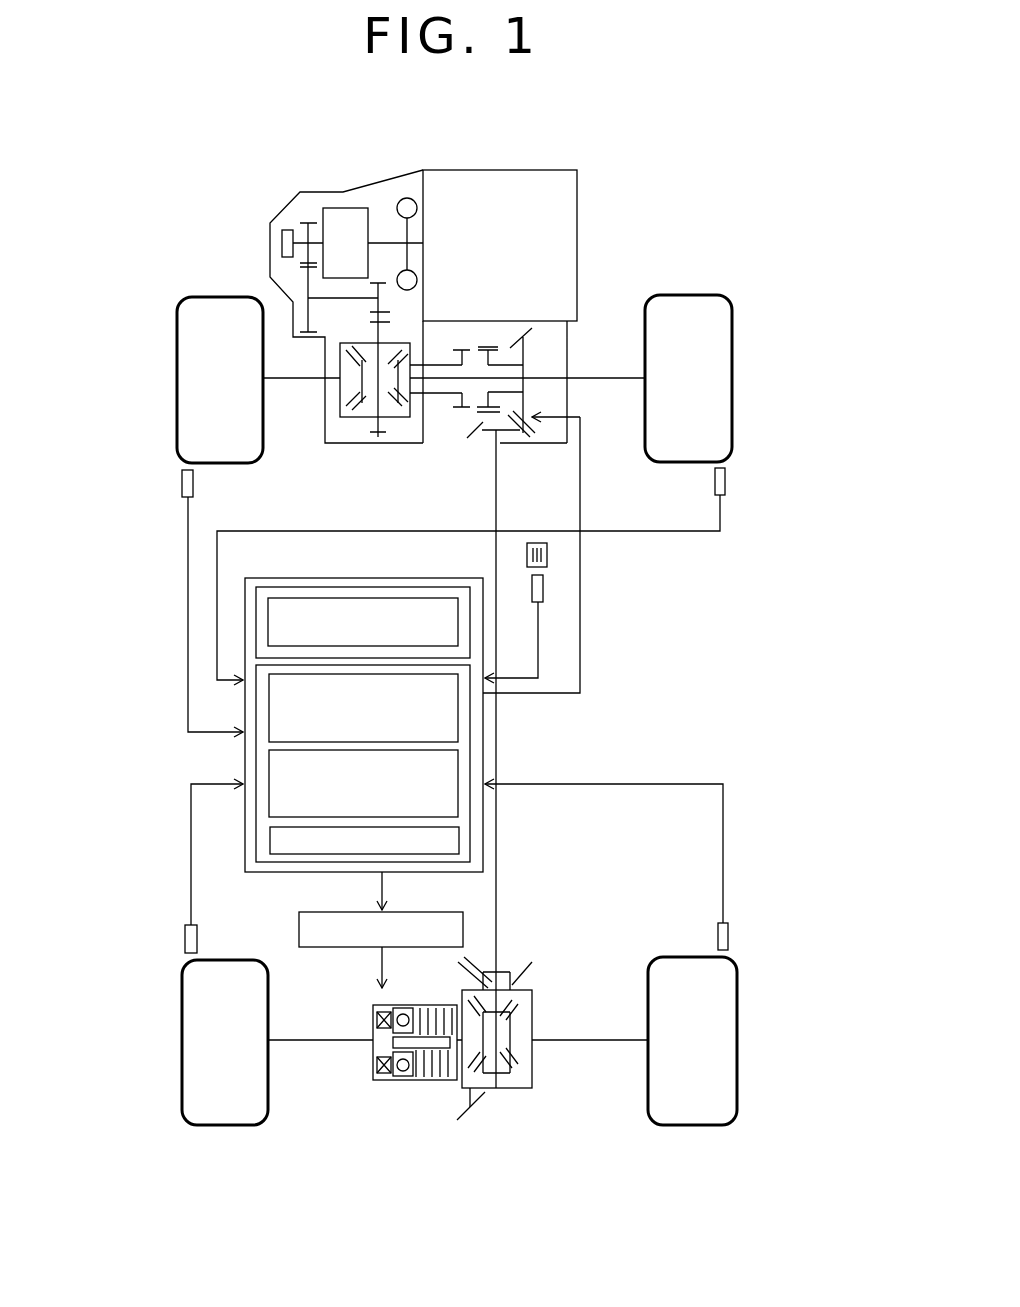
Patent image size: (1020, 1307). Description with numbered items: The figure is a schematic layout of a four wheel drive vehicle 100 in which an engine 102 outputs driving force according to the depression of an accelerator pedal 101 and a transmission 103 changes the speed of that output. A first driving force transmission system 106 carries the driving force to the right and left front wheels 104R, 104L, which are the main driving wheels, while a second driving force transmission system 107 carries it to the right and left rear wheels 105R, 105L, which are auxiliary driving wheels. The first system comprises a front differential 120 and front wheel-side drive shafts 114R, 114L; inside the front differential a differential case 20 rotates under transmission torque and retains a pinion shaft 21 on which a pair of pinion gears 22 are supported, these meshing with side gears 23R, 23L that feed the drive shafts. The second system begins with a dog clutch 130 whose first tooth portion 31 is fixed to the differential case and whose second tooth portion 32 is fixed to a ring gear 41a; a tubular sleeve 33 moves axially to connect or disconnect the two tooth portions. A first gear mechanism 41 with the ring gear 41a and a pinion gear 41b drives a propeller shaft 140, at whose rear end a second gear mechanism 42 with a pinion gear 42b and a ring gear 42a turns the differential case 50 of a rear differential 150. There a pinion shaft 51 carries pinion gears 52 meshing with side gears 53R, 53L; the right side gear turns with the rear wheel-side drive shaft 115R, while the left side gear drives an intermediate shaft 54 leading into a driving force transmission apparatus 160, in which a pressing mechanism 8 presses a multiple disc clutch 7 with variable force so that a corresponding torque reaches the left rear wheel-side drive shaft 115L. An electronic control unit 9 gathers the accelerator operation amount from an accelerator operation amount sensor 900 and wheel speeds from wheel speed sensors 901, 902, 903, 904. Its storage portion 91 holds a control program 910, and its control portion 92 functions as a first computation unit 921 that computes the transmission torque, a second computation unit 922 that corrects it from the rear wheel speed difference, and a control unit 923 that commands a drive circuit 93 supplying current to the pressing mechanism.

The four wheel drive vehicle 100 is at (650, 110).
The accelerator pedal 101 is at (547, 555).
The engine 102 is at (466, 170).
The transmission 103 is at (330, 186).
The left front wheel 104L is at (177, 378).
The right front wheel 104R is at (732, 376).
The left rear wheel 105L is at (182, 1040).
The right rear wheel 105R is at (737, 1040).
The first driving force transmission system 106 is at (590, 311).
The second driving force transmission system 107 is at (672, 565).
The left front wheel-side drive shaft 114L is at (312, 377).
The right front wheel-side drive shaft 114R is at (600, 361).
The left rear wheel-side drive shaft 115L is at (350, 1043).
The right rear wheel-side drive shaft 115R is at (573, 1043).
The front differential 120 is at (303, 427).
The dog clutch 130 is at (495, 332).
The propeller shaft 140 is at (499, 862).
The rear differential 150 is at (546, 1078).
The driving force transmission apparatus 160 is at (292, 1118).
The multiple disc clutch 7 is at (420, 1092).
The pressing mechanism 8 is at (380, 1090).
The electronic control unit (ECU) 9 is at (258, 577).
The storage portion 91 is at (387, 587).
The control program 910 is at (432, 598).
The control portion 92 is at (252, 738).
The first computation unit 921 is at (458, 722).
The second computation unit 922 is at (458, 760).
The control unit 923 is at (460, 838).
The drive circuit 93 is at (415, 908).
The differential case 20 is at (398, 419).
The pinion shaft 21 is at (370, 414).
The pinion gear 22 is at (367, 358).
The left-side side gear 23L is at (342, 390).
The right-side side gear 23R is at (402, 410).
The first tooth portion 31 is at (453, 362).
The second tooth portion 32 is at (481, 345).
The sleeve 33 is at (487, 396).
The first gear mechanism 41 is at (660, 470).
The ring gear 41a is at (522, 442).
The pinion gear 41b is at (532, 447).
The second gear mechanism 42 is at (600, 885).
The ring gear 42a is at (480, 962).
The pinion gear 42b is at (489, 982).
The differential case 50 is at (518, 1090).
The pinion shaft 51 is at (535, 1028).
The pinion gear 52 is at (506, 989).
The left-side side gear 53L is at (461, 1088).
The right-side side gear 53R is at (517, 1027).
The intermediate shaft 54 is at (458, 1032).
The accelerator operation amount sensor 900 is at (543, 590).
The wheel speed sensor 901 is at (182, 482).
The wheel speed sensor 902 is at (726, 481).
The wheel speed sensor 903 is at (185, 938).
The wheel speed sensor 904 is at (728, 938).